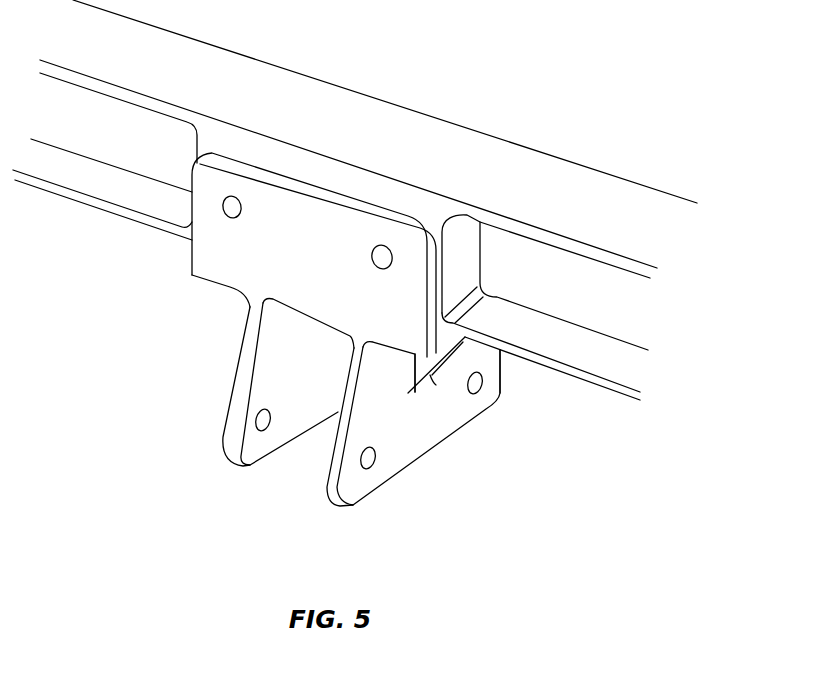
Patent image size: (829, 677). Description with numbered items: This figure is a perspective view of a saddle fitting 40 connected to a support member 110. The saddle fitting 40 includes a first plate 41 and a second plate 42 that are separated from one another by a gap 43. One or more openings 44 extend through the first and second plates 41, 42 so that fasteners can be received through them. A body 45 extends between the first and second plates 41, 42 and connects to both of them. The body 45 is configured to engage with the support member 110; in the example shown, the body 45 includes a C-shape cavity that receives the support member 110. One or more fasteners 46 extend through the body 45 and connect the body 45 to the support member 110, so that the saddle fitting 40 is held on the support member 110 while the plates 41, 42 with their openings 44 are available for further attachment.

The support member 110 is at (568, 200).
The saddle fitting 40 is at (138, 398).
The first plate 41 is at (240, 353).
The second plate 42 is at (423, 425).
The gap 43 is at (282, 473).
The openings 44 is at (258, 433).
The body 45 is at (298, 248).
The fasteners 46 is at (232, 195).